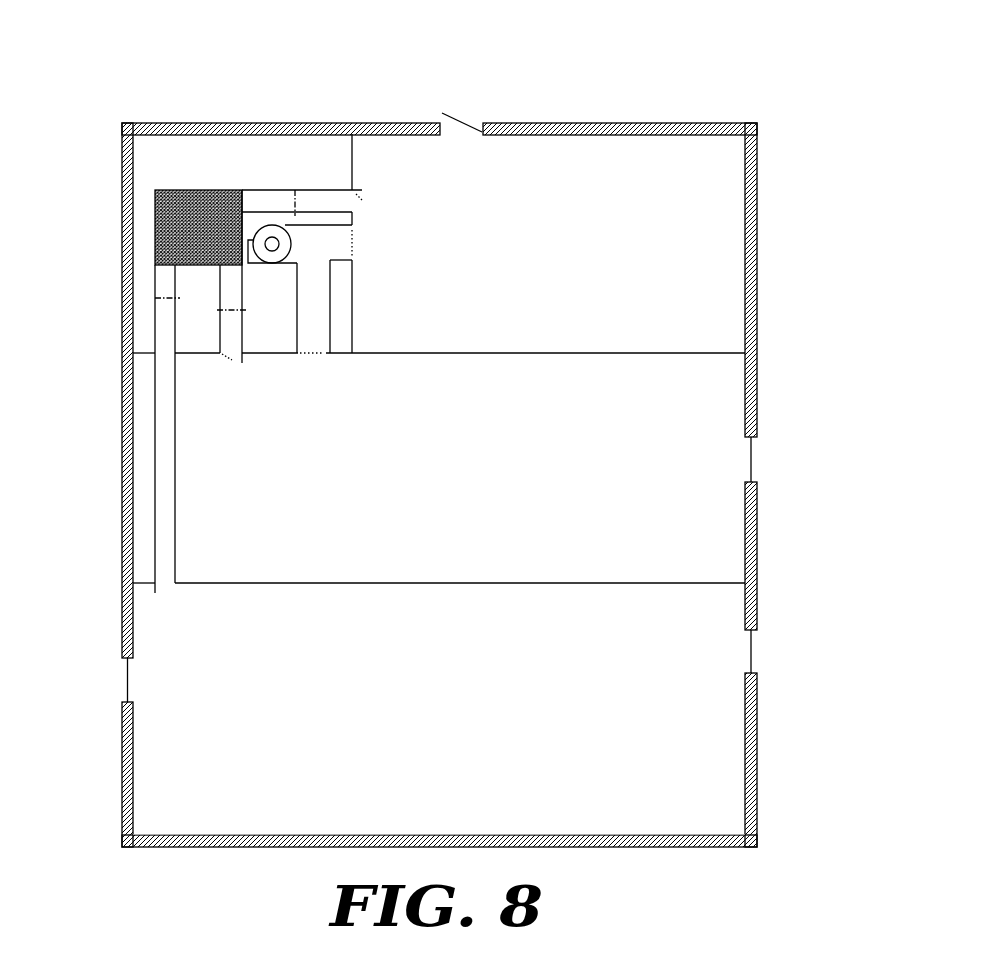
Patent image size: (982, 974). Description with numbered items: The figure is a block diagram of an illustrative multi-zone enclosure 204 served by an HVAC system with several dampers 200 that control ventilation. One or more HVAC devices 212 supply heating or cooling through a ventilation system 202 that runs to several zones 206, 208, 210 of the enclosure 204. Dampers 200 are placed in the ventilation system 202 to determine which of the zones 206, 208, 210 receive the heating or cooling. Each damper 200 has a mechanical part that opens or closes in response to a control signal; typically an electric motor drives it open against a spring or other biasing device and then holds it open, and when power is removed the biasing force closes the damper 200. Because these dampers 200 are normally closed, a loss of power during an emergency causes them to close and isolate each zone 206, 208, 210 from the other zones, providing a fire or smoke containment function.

The damper 200 is at (299, 155).
The ventilation system 202 is at (253, 188).
The enclosure 204 is at (526, 68).
The zone 206 is at (683, 338).
The zone 208 is at (683, 570).
The zone 210 is at (683, 814).
The HVAC device 212 is at (167, 232).